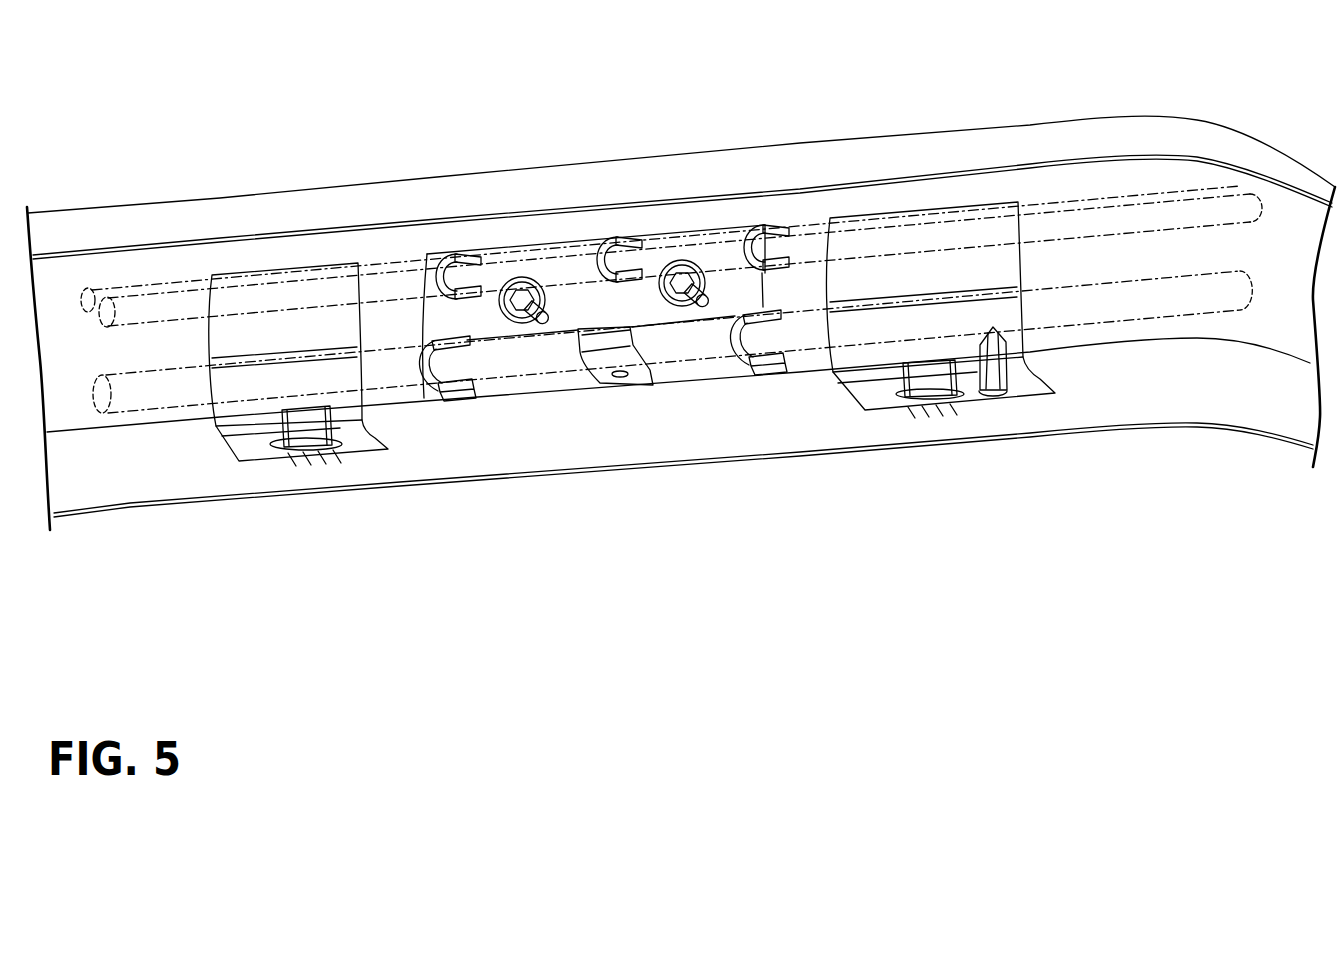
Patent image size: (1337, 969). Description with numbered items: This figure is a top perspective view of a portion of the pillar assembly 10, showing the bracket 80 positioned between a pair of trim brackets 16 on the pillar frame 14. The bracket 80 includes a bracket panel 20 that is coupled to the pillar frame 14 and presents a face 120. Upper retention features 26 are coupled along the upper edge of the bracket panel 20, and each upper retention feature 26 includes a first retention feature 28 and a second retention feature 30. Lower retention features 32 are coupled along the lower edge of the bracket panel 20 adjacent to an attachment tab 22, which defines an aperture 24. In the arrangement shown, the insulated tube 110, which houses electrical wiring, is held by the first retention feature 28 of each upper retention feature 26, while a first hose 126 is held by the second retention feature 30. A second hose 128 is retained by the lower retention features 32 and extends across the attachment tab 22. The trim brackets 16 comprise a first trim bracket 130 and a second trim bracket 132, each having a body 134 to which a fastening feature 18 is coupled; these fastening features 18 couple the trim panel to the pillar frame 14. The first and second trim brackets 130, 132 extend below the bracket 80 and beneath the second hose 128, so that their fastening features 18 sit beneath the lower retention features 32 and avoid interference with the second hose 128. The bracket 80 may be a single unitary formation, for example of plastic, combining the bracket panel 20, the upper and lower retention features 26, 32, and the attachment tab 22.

The pillar assembly 10 is at (907, 128).
The pillar frame 14 is at (236, 214).
The trim bracket 16 is at (210, 378).
The fastening feature 18 is at (288, 460).
The bracket panel 20 is at (655, 307).
The attachment tab 22 is at (595, 381).
The aperture 24 is at (622, 378).
The upper retention feature 26 is at (427, 257).
The first retention feature 28 is at (440, 256).
The second retention feature 30 is at (480, 283).
The lower retention feature 32 is at (427, 383).
The bracket 80 is at (553, 243).
The insulated tube 110 is at (1100, 197).
The face 120 is at (568, 316).
The first hose 126 is at (1193, 217).
The second hose 128 is at (1188, 290).
The first trim bracket 130 is at (353, 440).
The second trim bracket 132 is at (1028, 382).
The body 134 is at (240, 416).